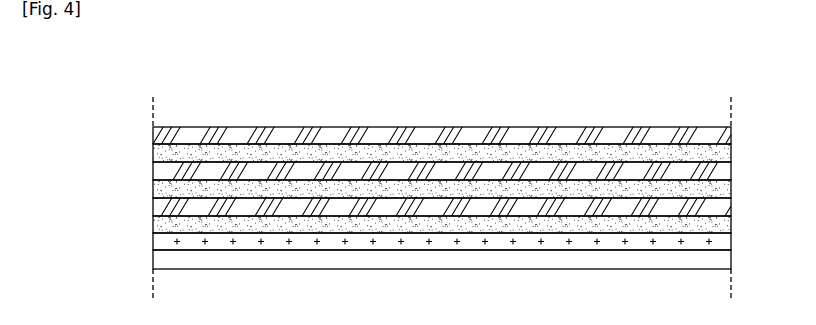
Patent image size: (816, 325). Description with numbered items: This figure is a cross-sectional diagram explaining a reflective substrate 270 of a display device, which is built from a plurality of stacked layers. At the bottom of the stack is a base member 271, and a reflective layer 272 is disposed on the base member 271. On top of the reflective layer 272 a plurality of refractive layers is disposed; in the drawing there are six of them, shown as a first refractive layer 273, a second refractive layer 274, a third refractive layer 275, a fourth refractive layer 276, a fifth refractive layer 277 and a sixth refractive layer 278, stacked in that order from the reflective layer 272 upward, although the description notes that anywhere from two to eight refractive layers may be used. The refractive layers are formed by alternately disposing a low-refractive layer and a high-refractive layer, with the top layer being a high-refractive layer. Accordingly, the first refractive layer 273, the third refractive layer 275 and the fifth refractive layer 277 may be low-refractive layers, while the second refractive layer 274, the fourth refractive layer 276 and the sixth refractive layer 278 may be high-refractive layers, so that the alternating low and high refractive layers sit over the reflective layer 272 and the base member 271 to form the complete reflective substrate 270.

The reflective substrate 270 is at (296, 72).
The base member 271 is at (727, 260).
The reflective layer 272 is at (727, 242).
The first refractive layer 273 is at (727, 224).
The second refractive layer 274 is at (727, 207).
The third refractive layer 275 is at (727, 190).
The fourth refractive layer 276 is at (727, 170).
The fifth refractive layer 277 is at (727, 152).
The sixth refractive layer 278 is at (728, 136).